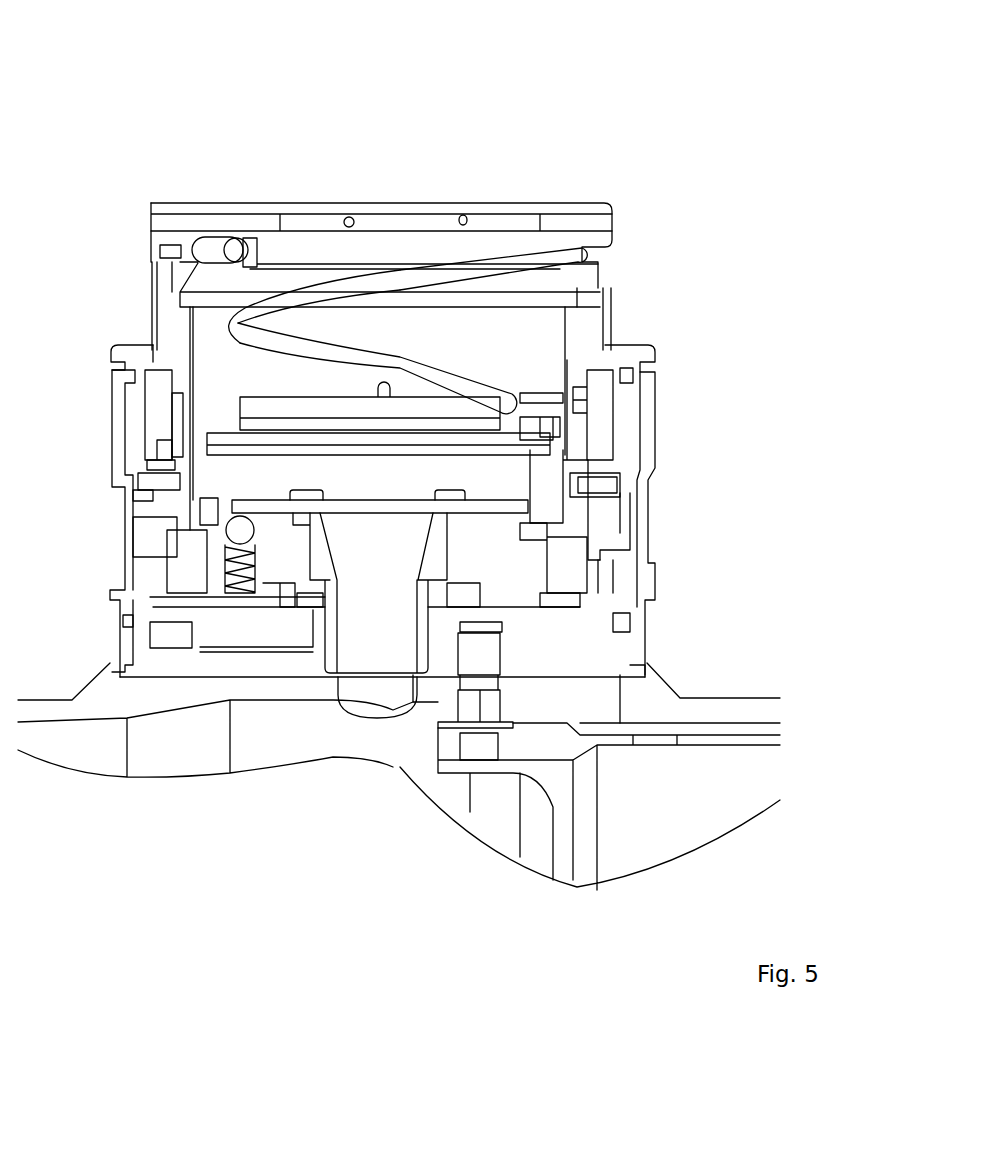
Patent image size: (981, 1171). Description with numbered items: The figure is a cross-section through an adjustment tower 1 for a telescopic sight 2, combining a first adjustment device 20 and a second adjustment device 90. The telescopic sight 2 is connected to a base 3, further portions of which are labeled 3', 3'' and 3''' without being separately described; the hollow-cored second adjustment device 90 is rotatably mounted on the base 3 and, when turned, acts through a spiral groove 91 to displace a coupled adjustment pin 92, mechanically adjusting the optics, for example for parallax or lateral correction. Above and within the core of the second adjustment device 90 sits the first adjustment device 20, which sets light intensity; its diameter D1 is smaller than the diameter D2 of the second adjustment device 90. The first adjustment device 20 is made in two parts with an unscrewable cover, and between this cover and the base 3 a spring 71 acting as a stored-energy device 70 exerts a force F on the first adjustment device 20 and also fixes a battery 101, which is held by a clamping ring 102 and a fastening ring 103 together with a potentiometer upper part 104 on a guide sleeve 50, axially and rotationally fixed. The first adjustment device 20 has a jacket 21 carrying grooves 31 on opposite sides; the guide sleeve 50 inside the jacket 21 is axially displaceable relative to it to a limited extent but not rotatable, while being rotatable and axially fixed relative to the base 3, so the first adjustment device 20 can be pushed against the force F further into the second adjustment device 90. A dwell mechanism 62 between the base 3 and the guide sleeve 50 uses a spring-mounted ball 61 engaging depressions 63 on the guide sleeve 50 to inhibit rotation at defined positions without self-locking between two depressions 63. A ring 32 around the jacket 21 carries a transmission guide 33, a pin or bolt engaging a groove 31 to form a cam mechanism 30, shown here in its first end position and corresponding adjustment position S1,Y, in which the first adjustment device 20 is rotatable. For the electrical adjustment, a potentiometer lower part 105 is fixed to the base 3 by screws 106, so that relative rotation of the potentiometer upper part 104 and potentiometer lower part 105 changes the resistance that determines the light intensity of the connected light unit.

The adjustment tower 1 is at (695, 75).
The telescopic sight 2 is at (745, 705).
The base 3 is at (418, 630).
The housing part 3' is at (648, 641).
The housing ring 3'' is at (424, 511).
The housing part 3''' is at (634, 543).
The first adjustment device 20 is at (150, 238).
The jacket 21 is at (190, 417).
The cam mechanism 30 is at (175, 452).
The grooves 31 is at (177, 442).
The ring 32 is at (143, 498).
The transmission guide 33 is at (155, 485).
The guide sleeve 50 is at (557, 477).
The ball 61 is at (233, 537).
The dwell mechanism 62 is at (215, 507).
The depressions 63 is at (233, 518).
The stored-energy device 70 is at (342, 348).
The spring 71 is at (492, 265).
The second adjustment device 90 is at (120, 586).
The spiral groove 91 is at (467, 626).
The adjustment pin 92 is at (480, 665).
The battery 101 is at (510, 420).
The clamping ring 102 is at (520, 432).
The fastening ring 103 is at (547, 405).
The potentiometer upper part 104 is at (377, 440).
The potentiometer lower part 105 is at (387, 508).
The screws 106 is at (455, 498).
The first end position and adjustment position S1,Y is at (580, 488).
The diameter of the first adjustment device D1 is at (618, 210).
The diameter of the second adjustment device D2 is at (657, 375).
The force F is at (382, 132).